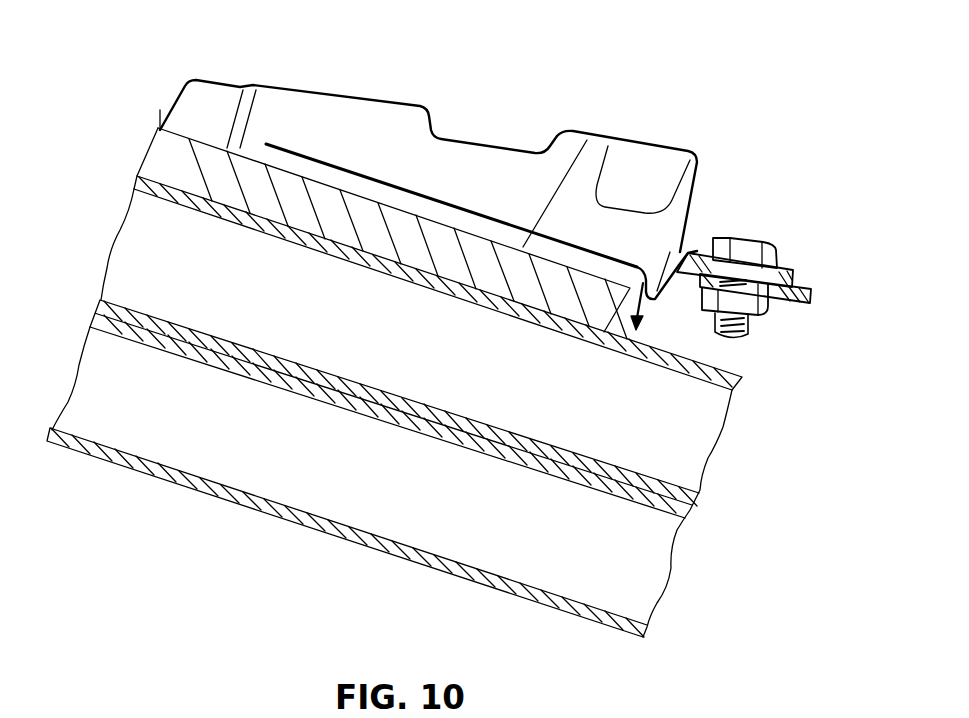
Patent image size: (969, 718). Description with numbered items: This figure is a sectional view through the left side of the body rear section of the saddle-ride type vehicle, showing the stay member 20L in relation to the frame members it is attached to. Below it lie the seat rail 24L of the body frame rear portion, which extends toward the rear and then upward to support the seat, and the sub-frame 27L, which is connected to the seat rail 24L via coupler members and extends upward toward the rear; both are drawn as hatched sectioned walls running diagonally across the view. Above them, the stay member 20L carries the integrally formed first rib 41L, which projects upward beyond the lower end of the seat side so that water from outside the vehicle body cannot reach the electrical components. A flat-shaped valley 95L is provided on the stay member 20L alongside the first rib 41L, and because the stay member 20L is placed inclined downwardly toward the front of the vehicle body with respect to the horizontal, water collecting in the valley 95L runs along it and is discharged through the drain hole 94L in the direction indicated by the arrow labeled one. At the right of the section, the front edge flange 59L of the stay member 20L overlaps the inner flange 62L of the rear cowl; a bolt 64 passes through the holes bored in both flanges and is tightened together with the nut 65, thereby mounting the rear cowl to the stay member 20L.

The stay member 20L is at (192, 128).
The seat rail 24L is at (432, 410).
The sub-frame 27L is at (340, 537).
The first rib 41L is at (470, 157).
The valley 95L is at (384, 178).
The drain hole 94L is at (660, 280).
The front edge flange 59L is at (790, 258).
The inner flange 62L is at (815, 280).
The bolt 64 is at (745, 248).
The nut 65 is at (768, 320).